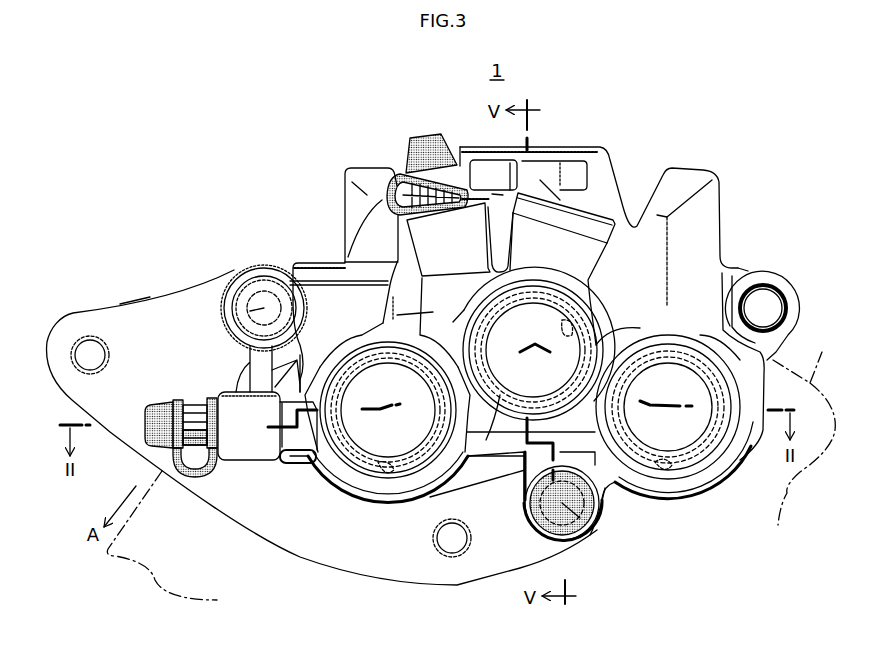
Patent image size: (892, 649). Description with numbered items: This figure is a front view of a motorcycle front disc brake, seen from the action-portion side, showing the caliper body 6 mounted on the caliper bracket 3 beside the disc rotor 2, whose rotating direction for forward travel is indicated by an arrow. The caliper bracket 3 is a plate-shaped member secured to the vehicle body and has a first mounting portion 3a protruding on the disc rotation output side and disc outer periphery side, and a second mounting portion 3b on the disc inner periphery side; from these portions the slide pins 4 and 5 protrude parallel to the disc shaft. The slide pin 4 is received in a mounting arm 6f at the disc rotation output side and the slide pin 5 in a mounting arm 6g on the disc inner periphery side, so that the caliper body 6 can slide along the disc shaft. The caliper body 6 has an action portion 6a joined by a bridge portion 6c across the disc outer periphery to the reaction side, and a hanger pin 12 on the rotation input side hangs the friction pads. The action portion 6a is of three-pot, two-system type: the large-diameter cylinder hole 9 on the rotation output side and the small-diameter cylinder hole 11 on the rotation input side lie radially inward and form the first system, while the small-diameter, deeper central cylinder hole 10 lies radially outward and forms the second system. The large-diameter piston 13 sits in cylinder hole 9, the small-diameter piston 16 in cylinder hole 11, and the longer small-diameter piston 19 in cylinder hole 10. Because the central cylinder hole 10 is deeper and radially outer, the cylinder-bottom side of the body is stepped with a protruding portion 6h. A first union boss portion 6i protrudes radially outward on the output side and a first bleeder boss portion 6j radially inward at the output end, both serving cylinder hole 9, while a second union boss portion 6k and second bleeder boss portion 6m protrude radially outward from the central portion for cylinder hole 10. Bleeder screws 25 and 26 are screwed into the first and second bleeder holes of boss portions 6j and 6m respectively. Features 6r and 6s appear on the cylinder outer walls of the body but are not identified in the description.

The disc rotor 2 is at (804, 428).
The caliper bracket 3 is at (322, 436).
The first mounting portion 3a is at (153, 301).
The second mounting portion 3b is at (430, 585).
The slide pin 4 is at (240, 316).
The slide pin 5 is at (580, 540).
The caliper body 6 is at (491, 338).
The action portion 6a is at (720, 250).
The bridge portion 6c is at (562, 148).
The mounting arm 6f is at (268, 272).
The mounting arm 6g is at (608, 520).
The protruding portion 6h is at (531, 447).
The first union boss portion 6i is at (328, 296).
The first bleeder boss portion 6j is at (250, 455).
The second union boss portion 6k is at (597, 263).
The second bleeder boss portion 6m is at (480, 235).
The cylinder outer wall 6r is at (340, 488).
The cylinder outer wall 6s is at (730, 488).
The cylinder hole 9 is at (392, 478).
The central cylinder hole 10 is at (596, 310).
The cylinder hole 11 is at (662, 475).
The hanger pin 12 is at (773, 302).
The large-diameter piston 13 is at (408, 462).
The small-diameter piston 16 is at (672, 445).
The small-diameter piston 19 is at (527, 410).
The bleeder screw 25 is at (194, 406).
The bleeder screw 26 is at (427, 161).